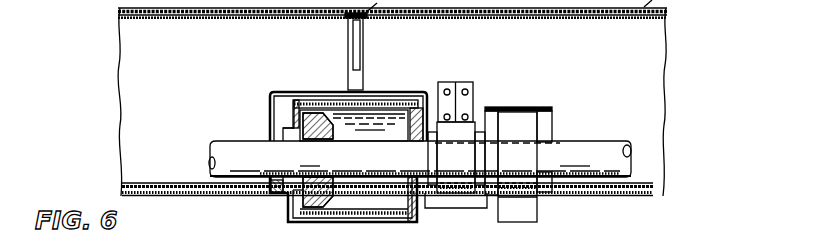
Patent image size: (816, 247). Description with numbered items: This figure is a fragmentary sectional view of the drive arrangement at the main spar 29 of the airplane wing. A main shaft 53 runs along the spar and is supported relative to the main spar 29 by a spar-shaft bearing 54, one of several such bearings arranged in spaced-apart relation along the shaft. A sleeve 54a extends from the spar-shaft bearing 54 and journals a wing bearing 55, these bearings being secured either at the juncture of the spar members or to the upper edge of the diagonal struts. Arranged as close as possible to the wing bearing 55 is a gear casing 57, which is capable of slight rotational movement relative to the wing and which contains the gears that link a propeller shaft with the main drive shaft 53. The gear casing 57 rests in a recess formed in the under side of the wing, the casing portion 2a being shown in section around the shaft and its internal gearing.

The main spar 29 is at (138, 113).
The motor casing 2a is at (373, 101).
The gear casing 57 is at (351, 191).
The main shaft 53 is at (615, 162).
The spar-shaft bearing 54 is at (462, 133).
The wing bearing 55 is at (522, 121).
The sleeve 54a is at (533, 138).